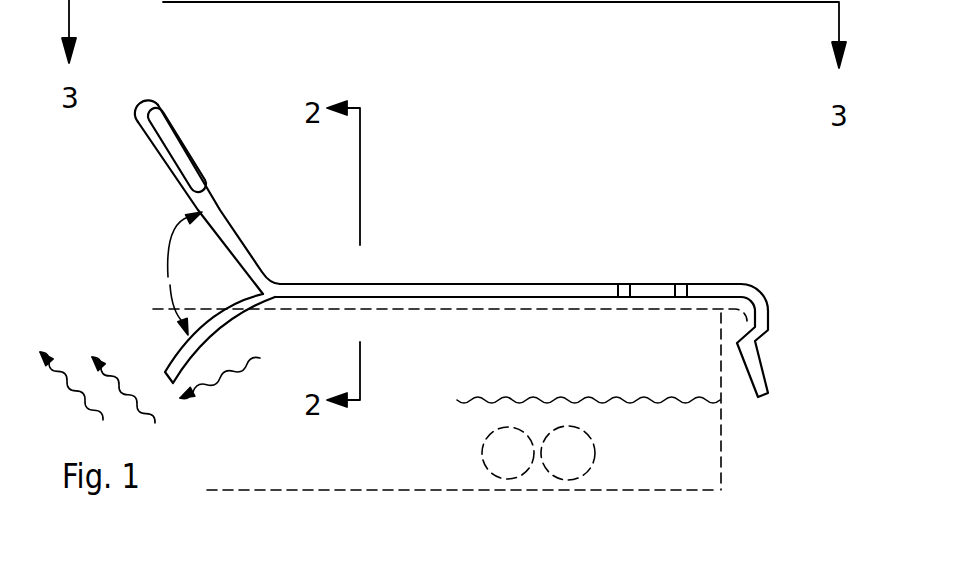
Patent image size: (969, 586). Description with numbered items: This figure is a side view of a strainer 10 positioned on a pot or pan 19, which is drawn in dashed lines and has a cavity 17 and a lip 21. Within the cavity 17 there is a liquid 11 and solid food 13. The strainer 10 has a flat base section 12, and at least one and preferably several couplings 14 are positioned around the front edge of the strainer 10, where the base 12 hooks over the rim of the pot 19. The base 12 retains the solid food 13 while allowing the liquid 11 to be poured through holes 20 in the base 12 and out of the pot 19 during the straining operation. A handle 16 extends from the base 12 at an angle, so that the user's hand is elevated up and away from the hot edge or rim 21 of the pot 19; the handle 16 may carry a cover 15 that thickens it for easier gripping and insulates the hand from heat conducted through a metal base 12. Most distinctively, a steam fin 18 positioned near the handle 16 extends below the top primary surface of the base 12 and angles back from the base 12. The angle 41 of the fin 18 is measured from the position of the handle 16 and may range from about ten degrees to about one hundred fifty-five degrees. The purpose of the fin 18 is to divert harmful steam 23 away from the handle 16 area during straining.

The strainer 10 is at (640, 160).
The liquid 11 is at (680, 470).
The base section 12 is at (532, 285).
The solid food 13 is at (568, 463).
The couplings 14 is at (797, 290).
The cover 15 is at (177, 137).
The handle 16 is at (140, 190).
The cavity 17 is at (457, 380).
The steam fin 18 is at (168, 365).
The pot or pan 19 is at (723, 478).
The holes 20 is at (627, 283).
The lip 21 is at (742, 313).
The steam 23 is at (210, 385).
The angle 41 is at (169, 273).